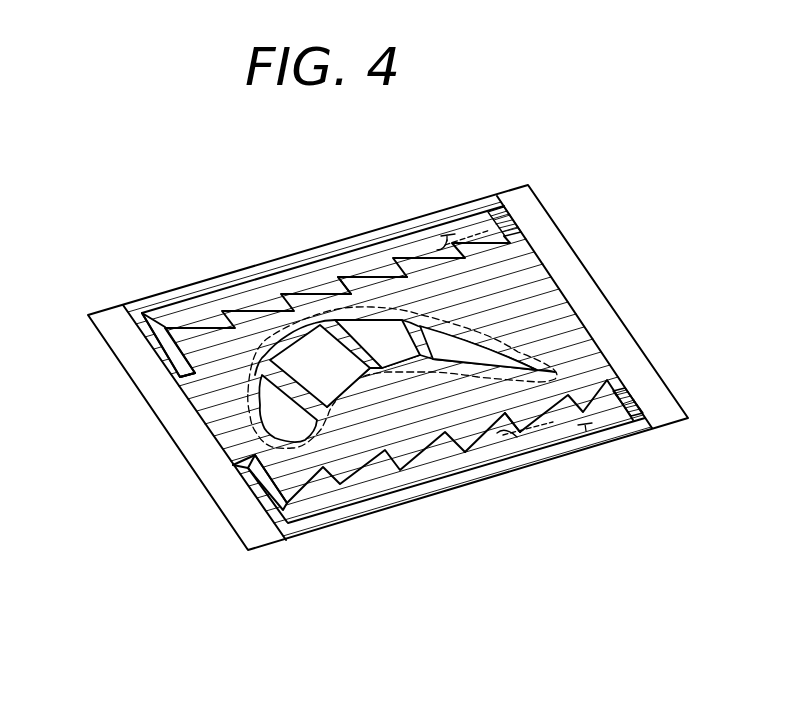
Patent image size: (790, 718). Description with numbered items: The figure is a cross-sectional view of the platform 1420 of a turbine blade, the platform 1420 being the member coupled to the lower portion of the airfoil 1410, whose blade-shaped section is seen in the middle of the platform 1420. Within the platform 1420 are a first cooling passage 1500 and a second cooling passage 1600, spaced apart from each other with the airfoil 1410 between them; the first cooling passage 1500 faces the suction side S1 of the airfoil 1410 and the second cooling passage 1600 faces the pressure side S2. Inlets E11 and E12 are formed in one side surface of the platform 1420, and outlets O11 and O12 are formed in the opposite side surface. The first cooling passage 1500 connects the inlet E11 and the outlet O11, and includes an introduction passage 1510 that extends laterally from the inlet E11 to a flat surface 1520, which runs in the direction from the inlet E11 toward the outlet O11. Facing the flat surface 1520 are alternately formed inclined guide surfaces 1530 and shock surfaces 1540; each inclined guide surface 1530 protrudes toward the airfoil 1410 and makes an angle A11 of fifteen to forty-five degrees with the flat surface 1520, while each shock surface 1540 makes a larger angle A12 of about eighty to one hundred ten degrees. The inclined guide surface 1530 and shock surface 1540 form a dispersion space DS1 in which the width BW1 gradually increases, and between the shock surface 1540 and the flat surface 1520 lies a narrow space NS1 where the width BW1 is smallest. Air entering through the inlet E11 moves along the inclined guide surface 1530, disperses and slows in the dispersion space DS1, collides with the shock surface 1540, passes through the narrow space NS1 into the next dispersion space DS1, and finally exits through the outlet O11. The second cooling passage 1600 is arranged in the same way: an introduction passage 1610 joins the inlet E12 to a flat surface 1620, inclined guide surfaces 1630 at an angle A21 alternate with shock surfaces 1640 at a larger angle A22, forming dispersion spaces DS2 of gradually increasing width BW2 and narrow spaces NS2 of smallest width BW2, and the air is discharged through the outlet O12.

The airfoil 1410 is at (252, 432).
The platform 1420 is at (220, 139).
The first cooling passage 1500 is at (362, 242).
The introduction passage 1510 is at (150, 347).
The flat surface 1520 is at (198, 297).
The inclined guide surface 1530 is at (252, 310).
The shock surface 1540 is at (395, 268).
The second cooling passage 1600 is at (322, 513).
The introduction passage 1610 is at (258, 478).
The flat surface 1620 is at (465, 458).
The inclined guide surface 1630 is at (422, 455).
The shock surface 1640 is at (583, 412).
The dispersion space DS1 is at (203, 311).
The dispersion space DS2 is at (327, 477).
The inlet E11 is at (172, 377).
The inlet E12 is at (247, 470).
The width of the first cooling passage BW1 is at (327, 262).
The width of the second cooling passage BW2 is at (500, 452).
The angle A11 is at (480, 232).
The angle A12 is at (437, 250).
The angle A21 is at (545, 424).
The angle A22 is at (522, 440).
The narrow space NS1 is at (450, 232).
The narrow space NS2 is at (588, 427).
The outlet O11 is at (515, 216).
The outlet O12 is at (637, 402).
The suction side S1 is at (445, 318).
The pressure side S2 is at (355, 385).